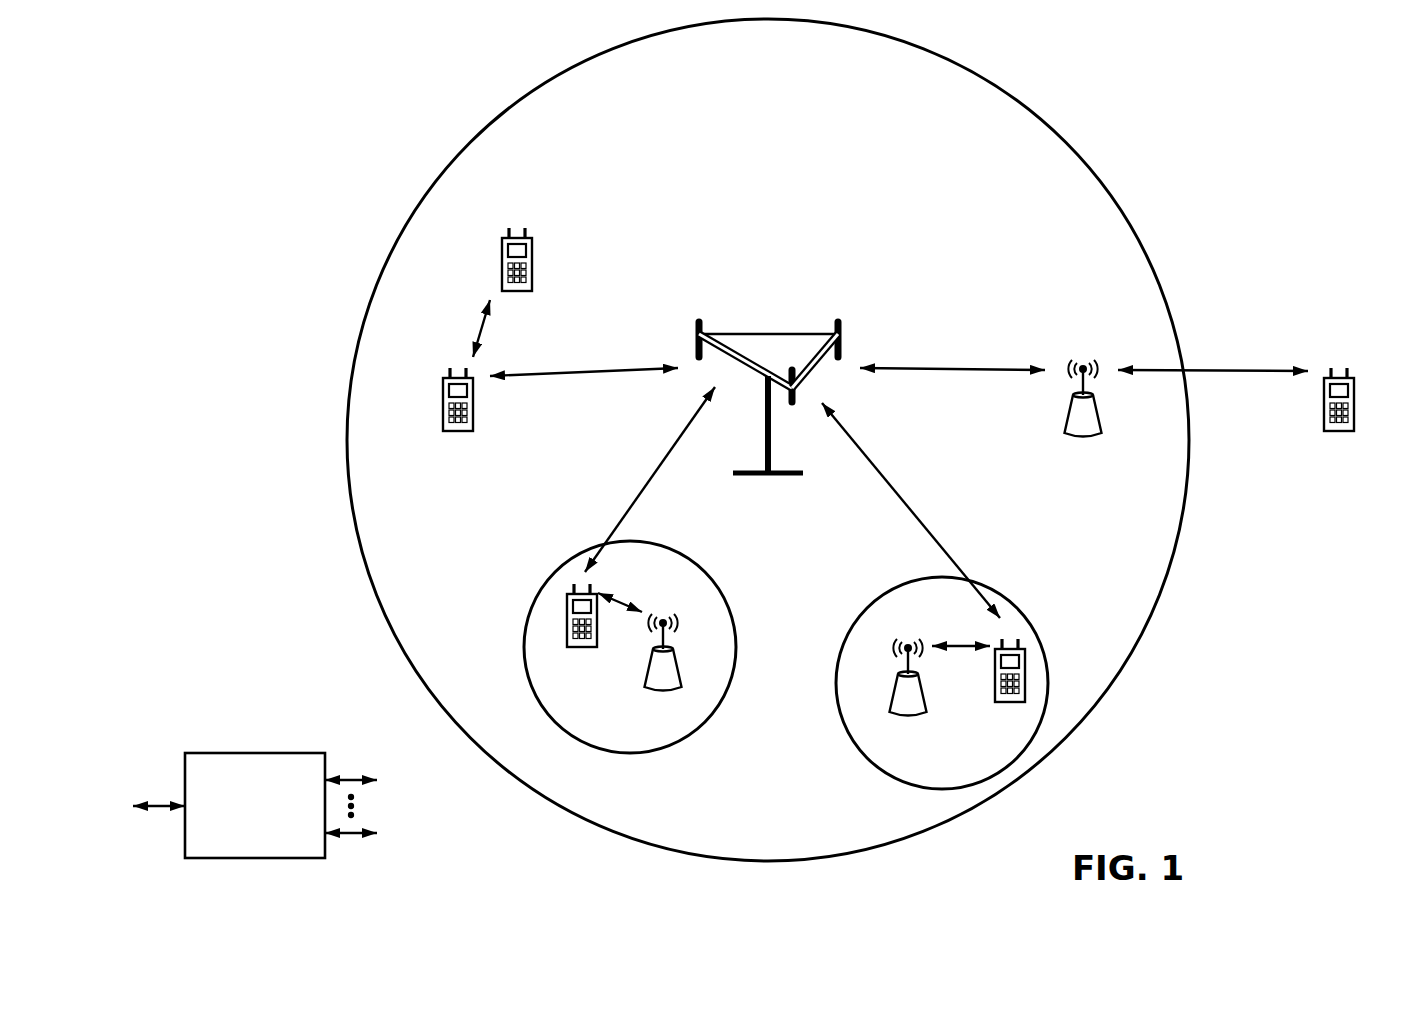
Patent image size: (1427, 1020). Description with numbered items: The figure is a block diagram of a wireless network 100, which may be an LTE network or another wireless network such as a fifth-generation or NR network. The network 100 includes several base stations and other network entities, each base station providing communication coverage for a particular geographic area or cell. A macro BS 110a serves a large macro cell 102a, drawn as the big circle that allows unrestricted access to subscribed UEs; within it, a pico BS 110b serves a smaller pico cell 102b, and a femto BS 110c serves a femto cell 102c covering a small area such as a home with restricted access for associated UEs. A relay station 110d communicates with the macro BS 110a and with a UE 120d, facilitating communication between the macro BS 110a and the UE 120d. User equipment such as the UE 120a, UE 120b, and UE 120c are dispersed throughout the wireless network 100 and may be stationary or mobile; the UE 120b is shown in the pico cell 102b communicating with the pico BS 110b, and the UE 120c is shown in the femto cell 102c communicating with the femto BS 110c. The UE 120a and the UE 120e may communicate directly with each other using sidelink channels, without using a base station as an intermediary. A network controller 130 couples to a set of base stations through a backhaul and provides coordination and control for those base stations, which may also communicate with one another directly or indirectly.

The wireless network 100 is at (766, 440).
The macro cell 102a is at (1047, 118).
The pico cell 102b is at (707, 577).
The femto cell 102c is at (862, 611).
The macro BS 110a is at (765, 333).
The pico BS 110b is at (682, 675).
The femto BS 110c is at (890, 698).
The relay station 110d is at (1084, 364).
The UE 120a is at (444, 385).
The UE 120b is at (567, 641).
The UE 120c is at (995, 696).
The UE 120d is at (1353, 386).
The UE 120e is at (502, 245).
The network controller 130 is at (251, 753).